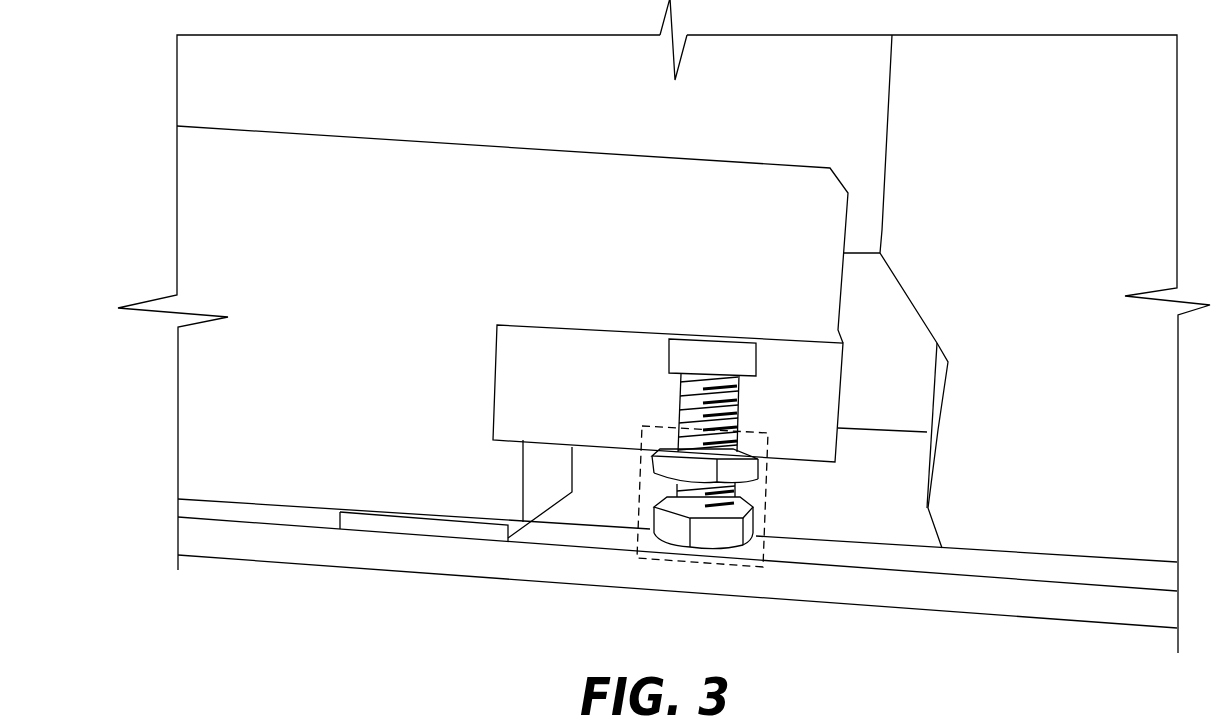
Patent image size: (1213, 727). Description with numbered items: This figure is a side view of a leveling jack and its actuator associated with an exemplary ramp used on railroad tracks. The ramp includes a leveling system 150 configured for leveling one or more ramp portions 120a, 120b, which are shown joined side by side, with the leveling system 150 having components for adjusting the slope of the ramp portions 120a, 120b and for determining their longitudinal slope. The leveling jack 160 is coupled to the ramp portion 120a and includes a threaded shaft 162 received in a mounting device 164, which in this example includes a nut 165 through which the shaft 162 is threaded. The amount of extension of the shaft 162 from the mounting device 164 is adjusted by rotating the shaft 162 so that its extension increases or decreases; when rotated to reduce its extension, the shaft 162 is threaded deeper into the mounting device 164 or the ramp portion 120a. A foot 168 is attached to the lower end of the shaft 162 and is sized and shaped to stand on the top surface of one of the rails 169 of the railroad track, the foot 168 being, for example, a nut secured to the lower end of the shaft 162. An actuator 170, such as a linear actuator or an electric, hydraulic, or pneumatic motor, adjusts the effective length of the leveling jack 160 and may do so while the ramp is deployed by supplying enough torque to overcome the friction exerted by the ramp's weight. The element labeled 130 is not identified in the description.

The ramp portion 120a is at (602, 252).
The ramp portion 120b is at (1029, 206).
The joint connector 130 is at (904, 366).
The leveling system 150 is at (484, 466).
The leveling jack 160 is at (642, 441).
The shaft 162 is at (740, 400).
The mounting device 164 is at (527, 358).
The nut 165 is at (750, 473).
The foot 168 is at (748, 528).
The rail 169 is at (878, 593).
The actuator 170 is at (731, 367).